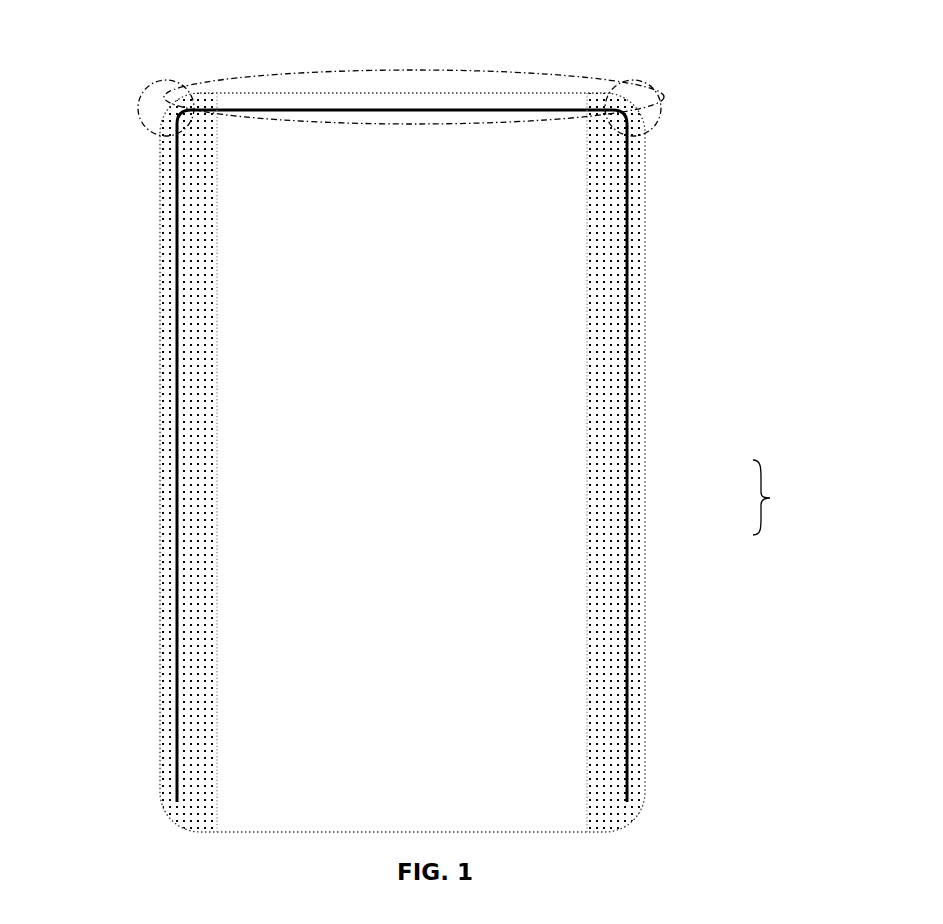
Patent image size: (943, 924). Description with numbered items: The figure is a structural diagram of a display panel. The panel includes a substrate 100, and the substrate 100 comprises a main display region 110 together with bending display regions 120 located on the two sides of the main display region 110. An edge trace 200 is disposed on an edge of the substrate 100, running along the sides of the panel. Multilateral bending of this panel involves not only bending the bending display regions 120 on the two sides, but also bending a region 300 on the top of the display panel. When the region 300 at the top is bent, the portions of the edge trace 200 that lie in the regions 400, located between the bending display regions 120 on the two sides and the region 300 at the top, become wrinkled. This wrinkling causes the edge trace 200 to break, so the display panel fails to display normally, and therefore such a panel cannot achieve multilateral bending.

The substrate 100 is at (791, 497).
The main display region 110 is at (575, 463).
The bending display regions 120 is at (610, 540).
The edge trace 200 is at (633, 652).
The region on the top of the display panel 300 is at (518, 70).
The regions between the bending display regions and the top region 400 is at (138, 93).